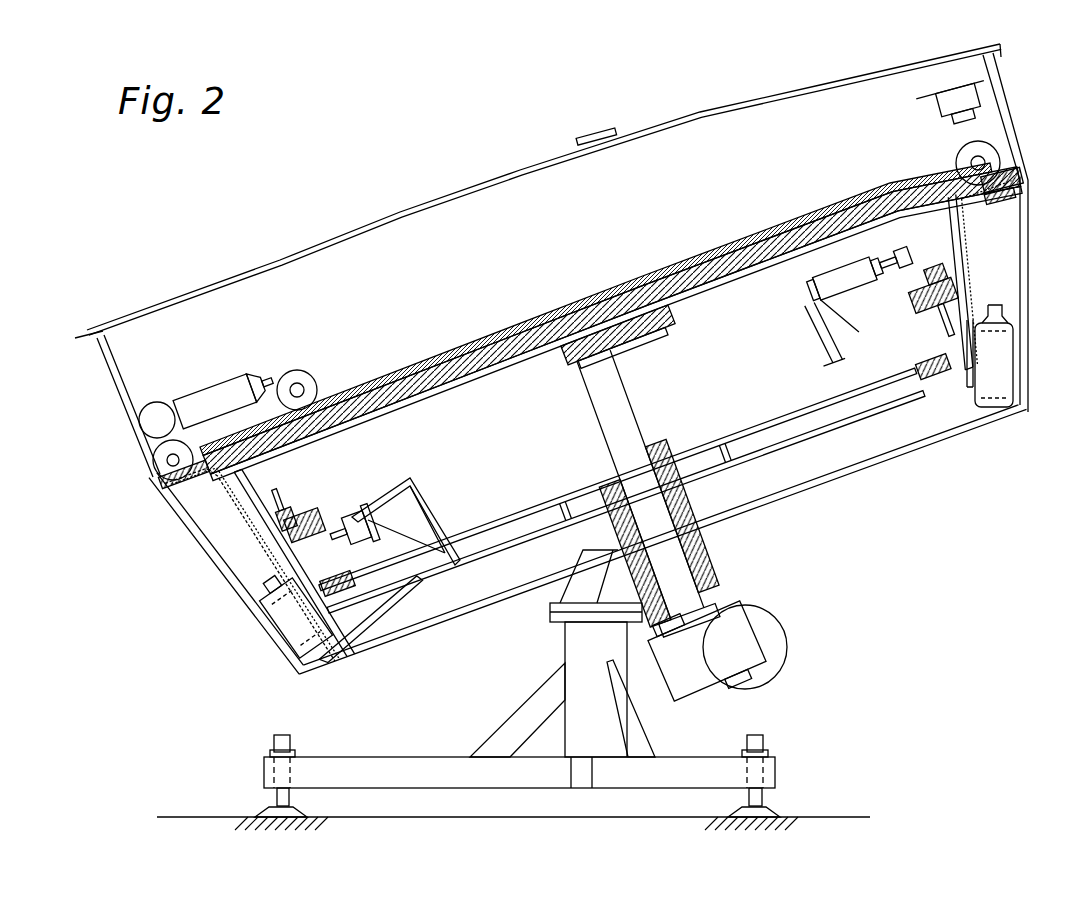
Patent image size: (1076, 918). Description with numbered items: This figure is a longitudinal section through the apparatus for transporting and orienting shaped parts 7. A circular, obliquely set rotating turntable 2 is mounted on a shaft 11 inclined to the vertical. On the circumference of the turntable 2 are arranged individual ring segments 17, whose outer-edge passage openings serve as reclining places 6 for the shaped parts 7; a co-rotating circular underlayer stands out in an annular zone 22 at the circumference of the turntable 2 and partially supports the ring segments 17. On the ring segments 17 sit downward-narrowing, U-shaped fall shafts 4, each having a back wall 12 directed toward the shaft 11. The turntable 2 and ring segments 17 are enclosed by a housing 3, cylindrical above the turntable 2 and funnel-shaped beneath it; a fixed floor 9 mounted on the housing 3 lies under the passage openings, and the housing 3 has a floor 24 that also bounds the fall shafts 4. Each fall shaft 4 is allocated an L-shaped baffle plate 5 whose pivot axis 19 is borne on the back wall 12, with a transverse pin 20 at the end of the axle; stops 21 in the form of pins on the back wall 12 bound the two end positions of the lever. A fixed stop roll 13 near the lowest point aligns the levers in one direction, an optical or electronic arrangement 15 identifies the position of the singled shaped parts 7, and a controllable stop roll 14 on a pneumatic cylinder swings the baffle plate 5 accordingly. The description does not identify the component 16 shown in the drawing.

The rotating turntable 2 is at (410, 375).
The housing 3 is at (1003, 90).
The fall shaft 4 is at (1005, 276).
The baffle plate 5 is at (967, 207).
The reclining places 6 is at (157, 472).
The shaped parts 7 is at (203, 412).
The fixed floor 9 is at (167, 493).
The shaft 11 is at (617, 418).
The back wall 12 is at (257, 474).
The fixed stop roll 13 is at (337, 550).
The controllable stop roll 14 is at (908, 265).
The optical or electronic arrangement 15 is at (950, 100).
The conveyor belt 16 is at (467, 380).
The ring segments 17 is at (247, 430).
The pivot axis 19 is at (932, 292).
The pin 20 is at (923, 332).
The stops 21 is at (913, 287).
The annular zone 22 is at (343, 423).
The floor 24 is at (452, 553).